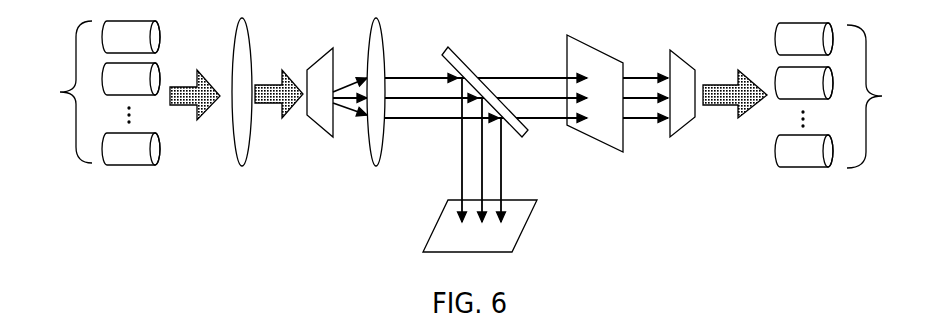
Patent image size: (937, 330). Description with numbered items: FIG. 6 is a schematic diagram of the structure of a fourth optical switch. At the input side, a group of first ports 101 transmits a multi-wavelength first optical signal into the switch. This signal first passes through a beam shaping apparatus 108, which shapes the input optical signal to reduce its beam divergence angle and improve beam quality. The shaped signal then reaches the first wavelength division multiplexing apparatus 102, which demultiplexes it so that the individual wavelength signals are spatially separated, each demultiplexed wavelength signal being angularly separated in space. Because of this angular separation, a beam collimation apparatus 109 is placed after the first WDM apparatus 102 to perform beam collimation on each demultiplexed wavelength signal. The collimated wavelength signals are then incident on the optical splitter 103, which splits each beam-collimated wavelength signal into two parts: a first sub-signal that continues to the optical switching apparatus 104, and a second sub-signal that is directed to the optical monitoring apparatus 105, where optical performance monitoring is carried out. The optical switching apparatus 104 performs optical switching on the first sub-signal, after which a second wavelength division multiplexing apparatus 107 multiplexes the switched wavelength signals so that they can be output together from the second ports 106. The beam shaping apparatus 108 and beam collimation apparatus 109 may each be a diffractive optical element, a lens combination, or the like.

The first port 101 is at (91, 93).
The first wavelength division multiplexing apparatus 102 is at (320, 57).
The optical splitter 103 is at (463, 60).
The optical switching apparatus 104 is at (595, 47).
The optical monitoring apparatus 105 is at (435, 225).
The second port 106 is at (850, 95).
The second wavelength division multiplexing apparatus 107 is at (687, 62).
The beam shaping apparatus 108 is at (238, 25).
The beam collimation apparatus 109 is at (372, 28).